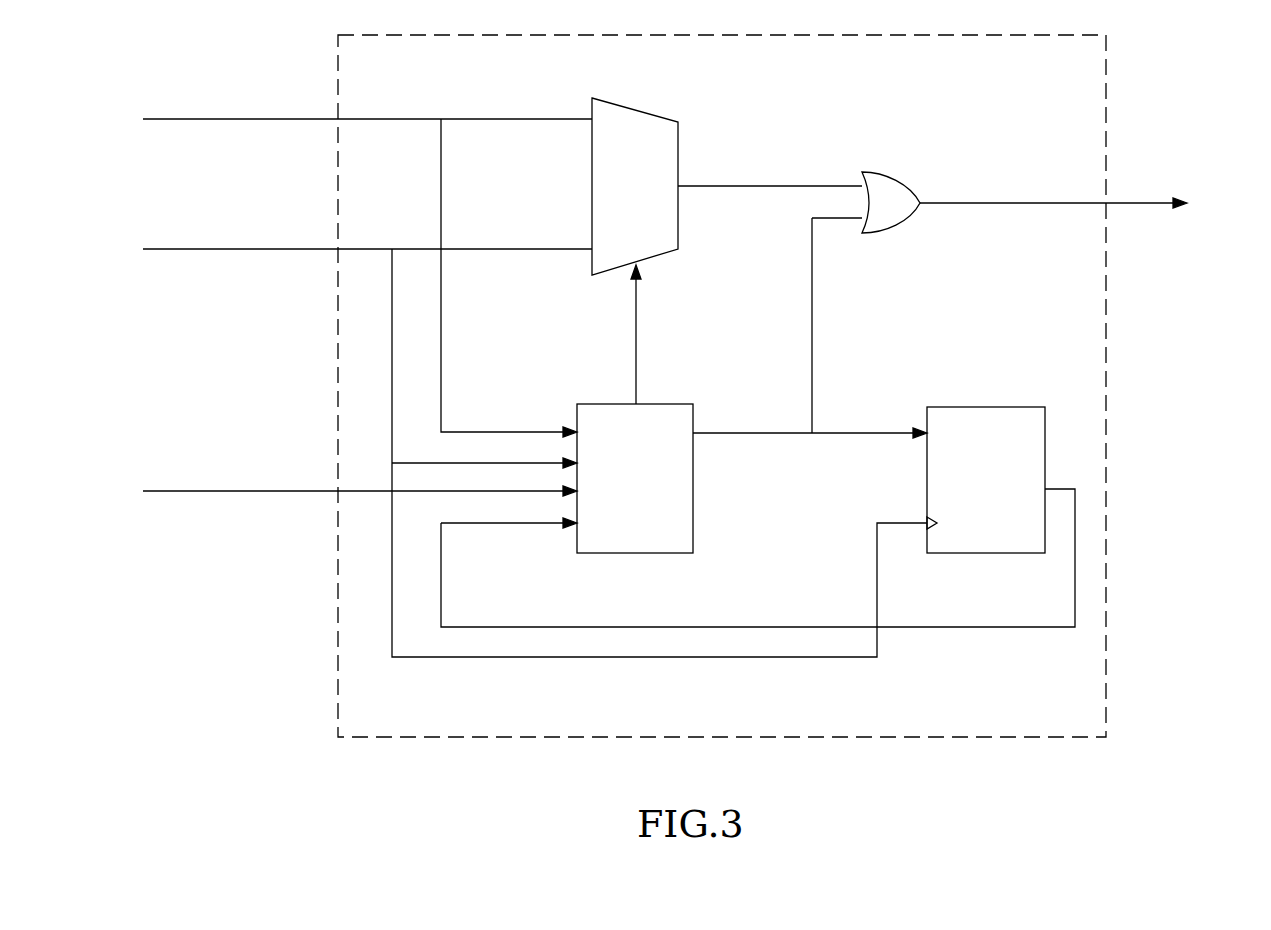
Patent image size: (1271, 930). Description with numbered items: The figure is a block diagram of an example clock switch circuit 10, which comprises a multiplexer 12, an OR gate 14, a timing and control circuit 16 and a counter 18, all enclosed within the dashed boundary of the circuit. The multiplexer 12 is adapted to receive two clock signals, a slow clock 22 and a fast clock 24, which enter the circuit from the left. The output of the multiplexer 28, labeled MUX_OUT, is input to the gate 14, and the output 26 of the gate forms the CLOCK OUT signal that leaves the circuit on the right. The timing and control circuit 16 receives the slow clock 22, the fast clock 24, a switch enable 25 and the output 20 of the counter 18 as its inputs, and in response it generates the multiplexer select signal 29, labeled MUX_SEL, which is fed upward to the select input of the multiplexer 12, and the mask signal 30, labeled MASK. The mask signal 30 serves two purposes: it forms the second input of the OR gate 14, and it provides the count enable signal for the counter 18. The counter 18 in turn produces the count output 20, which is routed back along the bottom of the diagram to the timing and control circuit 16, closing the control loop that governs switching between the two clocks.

The clock switch circuit 10 is at (388, 746).
The multiplexer 12 is at (637, 108).
The OR gate 14 is at (886, 168).
The timing and control circuit 16 is at (636, 553).
The counter 18 is at (966, 405).
The output of the counter 20 is at (955, 628).
The slow clock 22 is at (240, 120).
The fast clock 24 is at (240, 250).
The switch enable 25 is at (262, 493).
The output of the gate 26 is at (985, 204).
The output of the multiplexer 28 is at (725, 187).
The multiplexer select signal 29 is at (637, 367).
The mask signal 30 is at (745, 434).